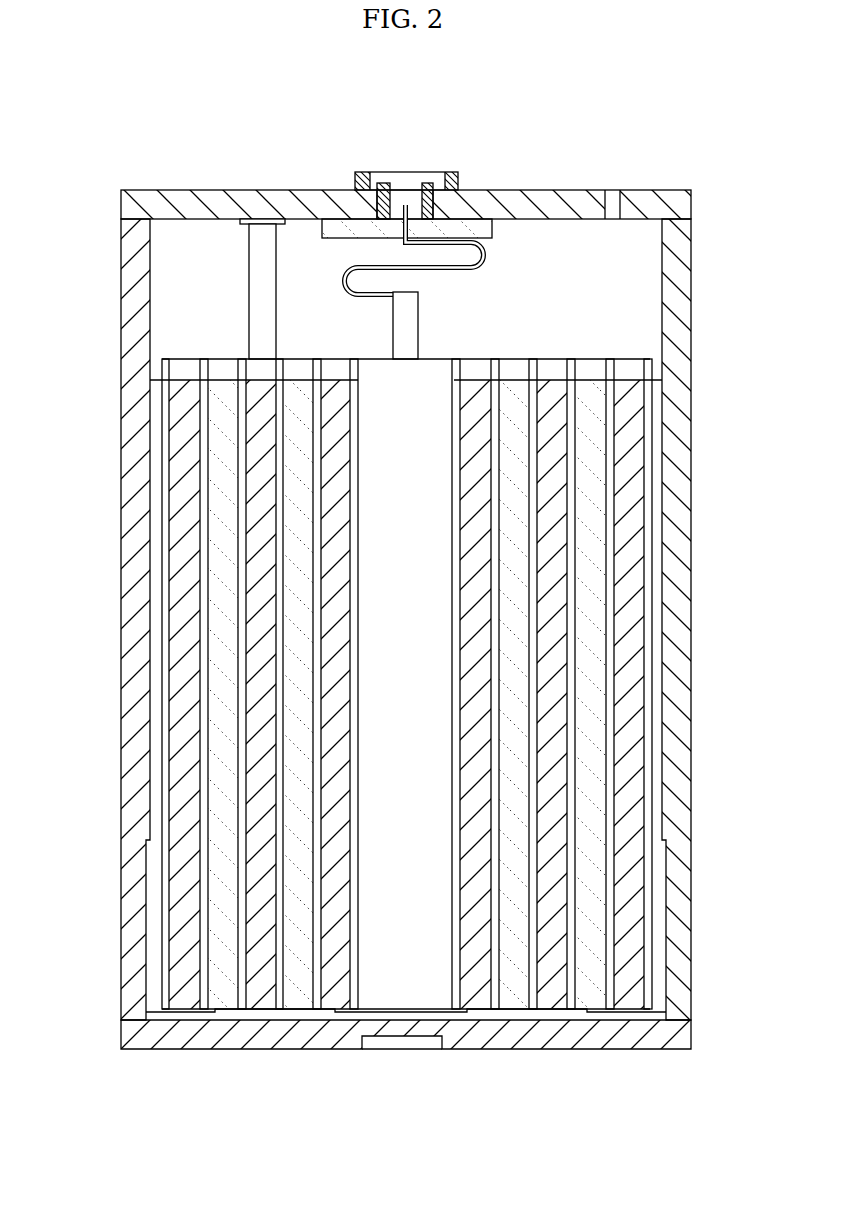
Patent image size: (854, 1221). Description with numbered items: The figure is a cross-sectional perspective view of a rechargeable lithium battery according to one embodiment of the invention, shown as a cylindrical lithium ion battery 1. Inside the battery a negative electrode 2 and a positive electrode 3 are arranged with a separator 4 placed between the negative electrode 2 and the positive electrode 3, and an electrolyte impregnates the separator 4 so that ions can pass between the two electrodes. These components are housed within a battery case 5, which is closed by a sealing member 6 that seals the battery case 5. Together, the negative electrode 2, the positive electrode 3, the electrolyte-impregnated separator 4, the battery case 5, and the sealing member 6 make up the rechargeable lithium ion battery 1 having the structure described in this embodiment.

The lithium ion battery 1 is at (410, 76).
The negative electrode 2 is at (220, 908).
The positive electrode 3 is at (622, 883).
The separator 4 is at (200, 967).
The battery case 5 is at (133, 357).
The sealing member 6 is at (363, 173).